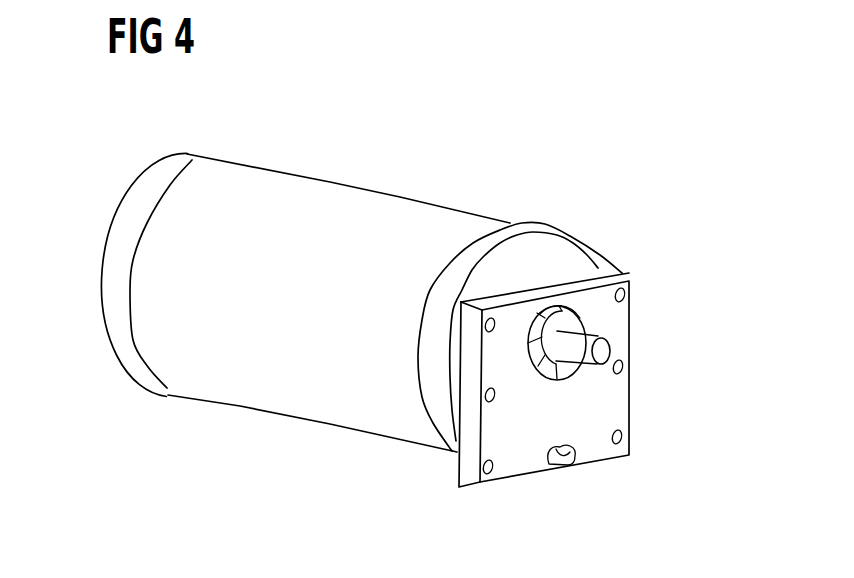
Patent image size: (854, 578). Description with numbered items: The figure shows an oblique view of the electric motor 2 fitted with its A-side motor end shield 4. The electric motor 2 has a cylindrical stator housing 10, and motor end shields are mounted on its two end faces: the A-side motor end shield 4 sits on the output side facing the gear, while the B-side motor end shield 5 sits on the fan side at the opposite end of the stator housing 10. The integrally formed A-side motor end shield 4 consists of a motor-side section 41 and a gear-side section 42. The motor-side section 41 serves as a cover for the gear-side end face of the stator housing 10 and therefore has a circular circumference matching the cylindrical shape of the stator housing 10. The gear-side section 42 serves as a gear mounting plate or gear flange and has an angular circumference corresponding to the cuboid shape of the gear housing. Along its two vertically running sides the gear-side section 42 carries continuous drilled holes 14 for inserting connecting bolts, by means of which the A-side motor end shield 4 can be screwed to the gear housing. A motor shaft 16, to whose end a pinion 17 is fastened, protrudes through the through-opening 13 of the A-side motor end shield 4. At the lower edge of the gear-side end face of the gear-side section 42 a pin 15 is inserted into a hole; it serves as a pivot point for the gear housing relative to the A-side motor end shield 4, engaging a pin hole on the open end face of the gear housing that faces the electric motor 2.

The electric motor 2 is at (354, 156).
The A-side motor end shield 4 is at (561, 226).
The B-side motor end shield 5 is at (192, 157).
The stator housing 10 is at (290, 407).
The through-opening 13 is at (570, 367).
The continuous drilled holes 14 is at (624, 440).
The pin 15 is at (561, 466).
The motor shaft 16 is at (565, 305).
The pinion 17 is at (608, 351).
The motor-side section 41 is at (503, 230).
The gear-side section 42 is at (598, 270).